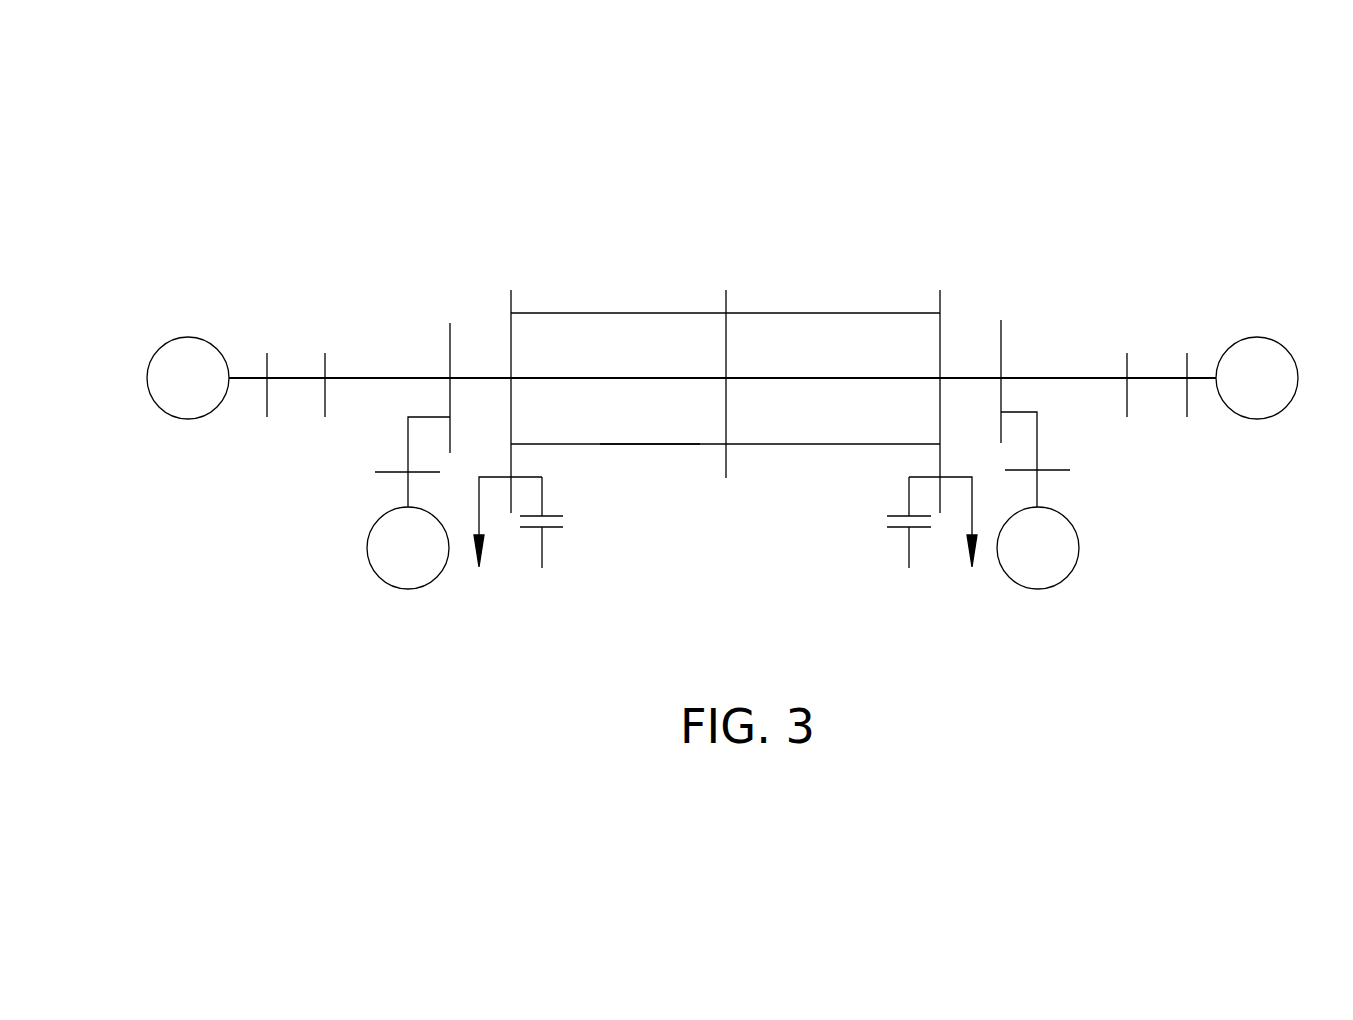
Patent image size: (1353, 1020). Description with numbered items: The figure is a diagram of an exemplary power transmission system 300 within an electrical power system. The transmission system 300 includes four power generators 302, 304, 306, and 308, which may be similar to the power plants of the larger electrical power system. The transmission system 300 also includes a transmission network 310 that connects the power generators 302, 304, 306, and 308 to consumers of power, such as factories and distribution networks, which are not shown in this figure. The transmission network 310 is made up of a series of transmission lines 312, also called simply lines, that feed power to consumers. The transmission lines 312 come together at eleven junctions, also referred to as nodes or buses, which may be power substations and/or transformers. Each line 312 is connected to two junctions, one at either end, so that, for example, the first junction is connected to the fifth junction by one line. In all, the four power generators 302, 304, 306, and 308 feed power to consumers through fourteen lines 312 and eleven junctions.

The power transmission system 300 is at (194, 168).
The power generator 302 is at (166, 343).
The power generator 304 is at (388, 584).
The power generator 306 is at (1062, 582).
The power generator 308 is at (1257, 419).
The transmission network 310 is at (803, 188).
The transmission lines 312 is at (377, 377).